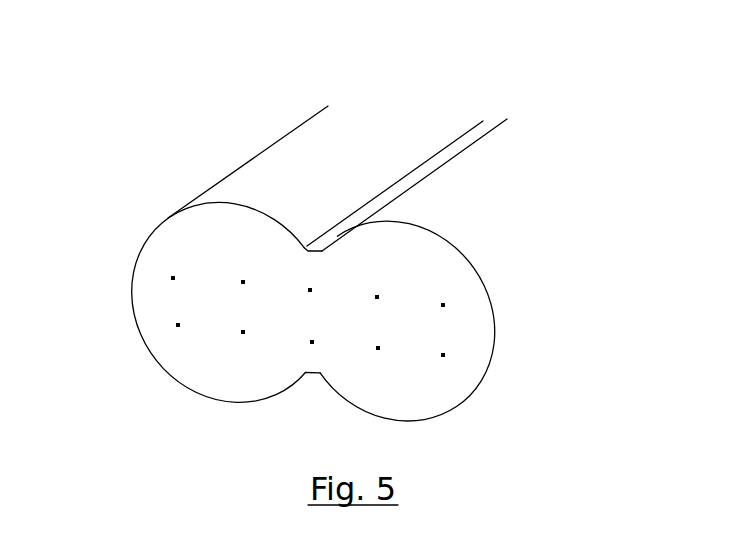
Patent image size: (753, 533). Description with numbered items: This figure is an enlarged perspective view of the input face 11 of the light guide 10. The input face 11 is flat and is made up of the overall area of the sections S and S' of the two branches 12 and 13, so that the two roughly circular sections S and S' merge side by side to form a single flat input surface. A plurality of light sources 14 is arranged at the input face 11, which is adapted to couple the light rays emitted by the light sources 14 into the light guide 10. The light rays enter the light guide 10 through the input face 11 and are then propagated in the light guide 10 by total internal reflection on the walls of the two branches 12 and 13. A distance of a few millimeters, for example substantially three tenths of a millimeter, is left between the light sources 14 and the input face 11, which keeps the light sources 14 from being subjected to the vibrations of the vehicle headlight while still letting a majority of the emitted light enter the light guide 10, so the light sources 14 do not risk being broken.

The light guide 10 is at (201, 94).
The input face 11 is at (138, 309).
The branch 12 is at (562, 170).
The branch 13 is at (331, 148).
The light sources 14 is at (242, 333).
The section S is at (462, 207).
The section S' is at (155, 179).